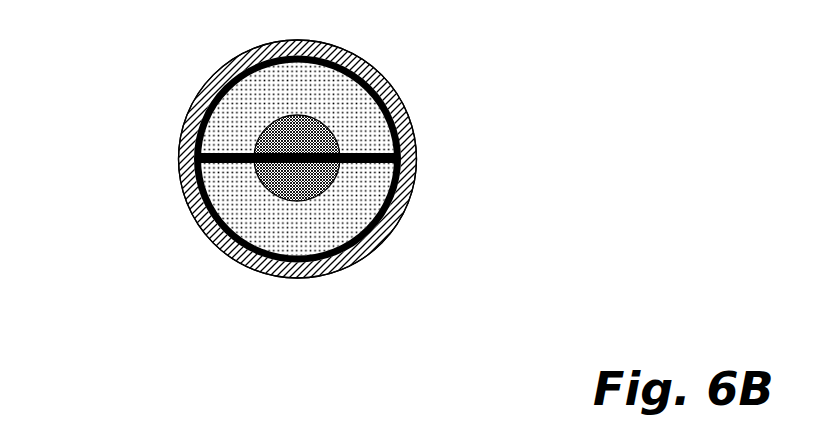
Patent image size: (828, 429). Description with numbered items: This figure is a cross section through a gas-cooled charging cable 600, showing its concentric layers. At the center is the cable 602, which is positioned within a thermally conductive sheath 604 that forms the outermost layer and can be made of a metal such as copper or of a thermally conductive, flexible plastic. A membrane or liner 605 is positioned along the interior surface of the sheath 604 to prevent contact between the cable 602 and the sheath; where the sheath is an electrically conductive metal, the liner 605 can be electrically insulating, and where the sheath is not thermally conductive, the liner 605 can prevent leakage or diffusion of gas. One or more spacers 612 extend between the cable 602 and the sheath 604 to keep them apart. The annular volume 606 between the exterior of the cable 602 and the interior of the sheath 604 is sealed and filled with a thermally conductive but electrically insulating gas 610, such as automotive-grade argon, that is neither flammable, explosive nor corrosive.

The gas-cooled charging cable 600 is at (138, 46).
The cable 602 is at (297, 158).
The thermally conductive sheath 604 is at (402, 202).
The liner 605 is at (363, 238).
The volume 606 is at (363, 120).
The gas 610 is at (233, 202).
The spacer 612 is at (233, 153).